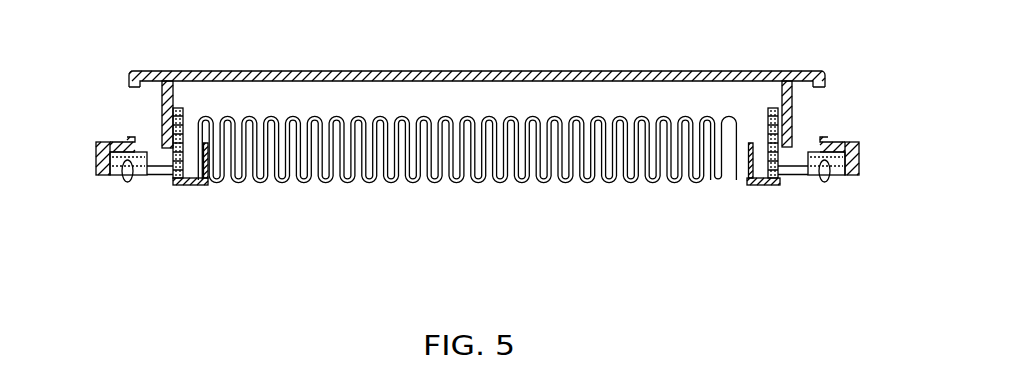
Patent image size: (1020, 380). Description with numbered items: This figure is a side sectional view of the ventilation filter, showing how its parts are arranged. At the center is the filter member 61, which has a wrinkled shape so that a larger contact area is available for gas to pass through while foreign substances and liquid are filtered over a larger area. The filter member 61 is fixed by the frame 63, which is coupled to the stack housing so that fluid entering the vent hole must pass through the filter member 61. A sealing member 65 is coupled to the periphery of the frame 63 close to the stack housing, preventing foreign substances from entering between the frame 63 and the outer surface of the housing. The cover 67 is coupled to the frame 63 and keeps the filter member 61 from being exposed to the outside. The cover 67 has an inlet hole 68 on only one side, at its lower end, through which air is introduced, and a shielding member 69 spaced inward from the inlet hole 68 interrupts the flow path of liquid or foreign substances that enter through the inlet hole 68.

The filter member 61 is at (517, 184).
The frame 63 is at (762, 187).
The sealing member 65 is at (825, 184).
The cover 67 is at (97, 153).
The inlet hole 68 is at (138, 118).
The shielding member 69 is at (786, 97).